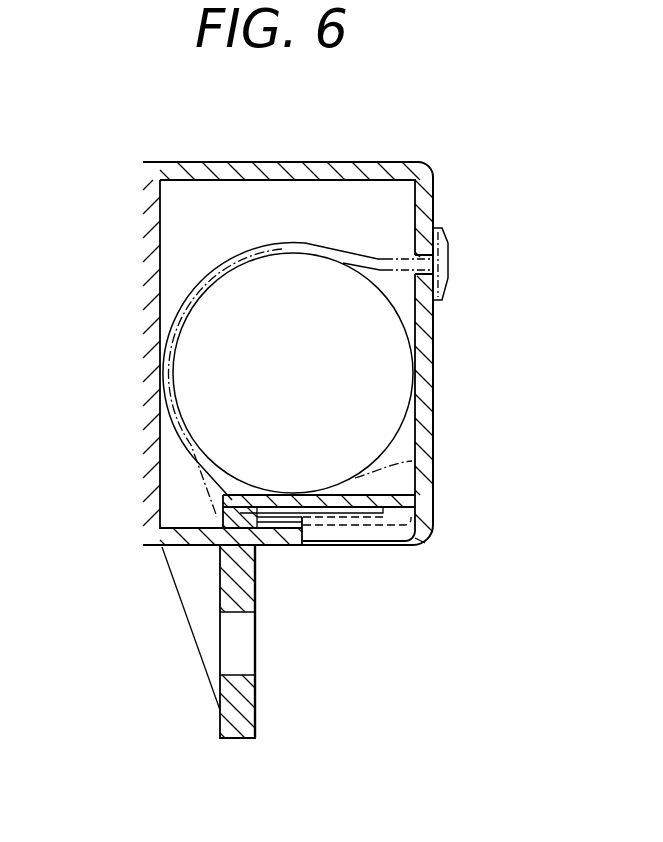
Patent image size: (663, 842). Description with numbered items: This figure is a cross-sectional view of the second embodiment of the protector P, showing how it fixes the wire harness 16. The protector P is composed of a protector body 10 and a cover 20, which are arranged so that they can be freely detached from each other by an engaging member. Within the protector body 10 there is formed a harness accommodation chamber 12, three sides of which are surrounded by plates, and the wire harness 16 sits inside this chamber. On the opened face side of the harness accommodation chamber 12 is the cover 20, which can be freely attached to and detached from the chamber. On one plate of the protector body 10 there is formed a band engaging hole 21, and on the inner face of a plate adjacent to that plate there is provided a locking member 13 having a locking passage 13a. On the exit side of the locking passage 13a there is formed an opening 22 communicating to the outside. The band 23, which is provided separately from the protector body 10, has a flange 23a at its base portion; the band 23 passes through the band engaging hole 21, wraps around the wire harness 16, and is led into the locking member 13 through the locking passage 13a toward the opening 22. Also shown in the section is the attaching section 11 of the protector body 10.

The protector P is at (128, 166).
The protector body 10 is at (365, 165).
The attaching section 11 is at (247, 697).
The harness accommodation chamber 12 is at (228, 195).
The locking member 13 is at (223, 498).
The locking passage 13a is at (223, 515).
The wire harness 16 is at (400, 466).
The cover 20 is at (153, 244).
The band engaging hole 21 is at (430, 224).
The opening 22 is at (327, 512).
The band 23 is at (178, 303).
The flange 23a is at (442, 283).